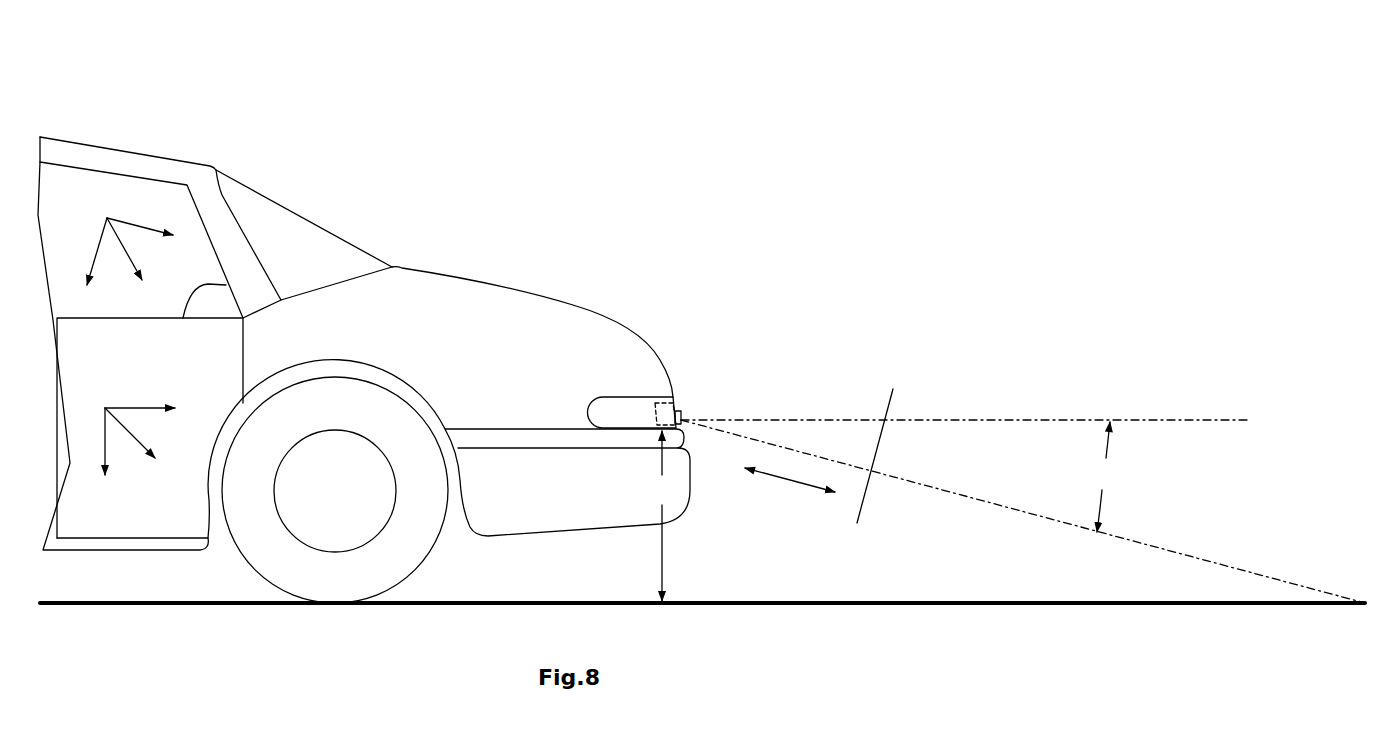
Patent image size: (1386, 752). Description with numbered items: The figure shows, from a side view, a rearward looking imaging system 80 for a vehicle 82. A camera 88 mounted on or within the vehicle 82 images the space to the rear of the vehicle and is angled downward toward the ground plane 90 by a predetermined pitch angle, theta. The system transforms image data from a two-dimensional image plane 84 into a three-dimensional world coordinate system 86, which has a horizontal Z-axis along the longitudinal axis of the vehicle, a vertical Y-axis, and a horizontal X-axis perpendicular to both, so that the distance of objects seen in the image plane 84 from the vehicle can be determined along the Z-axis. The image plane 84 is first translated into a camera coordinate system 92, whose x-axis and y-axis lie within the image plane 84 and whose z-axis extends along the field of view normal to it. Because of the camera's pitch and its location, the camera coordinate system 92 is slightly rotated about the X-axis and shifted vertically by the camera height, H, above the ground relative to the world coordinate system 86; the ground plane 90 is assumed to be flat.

The rearward looking imaging system 80 is at (683, 190).
The vehicle 82 is at (60, 136).
The two-dimensional image plane 84 is at (877, 447).
The three-dimensional world coordinate system 86 is at (137, 405).
The camera 88 is at (681, 414).
The ground plane 90 is at (882, 603).
The camera coordinate system 92 is at (142, 227).